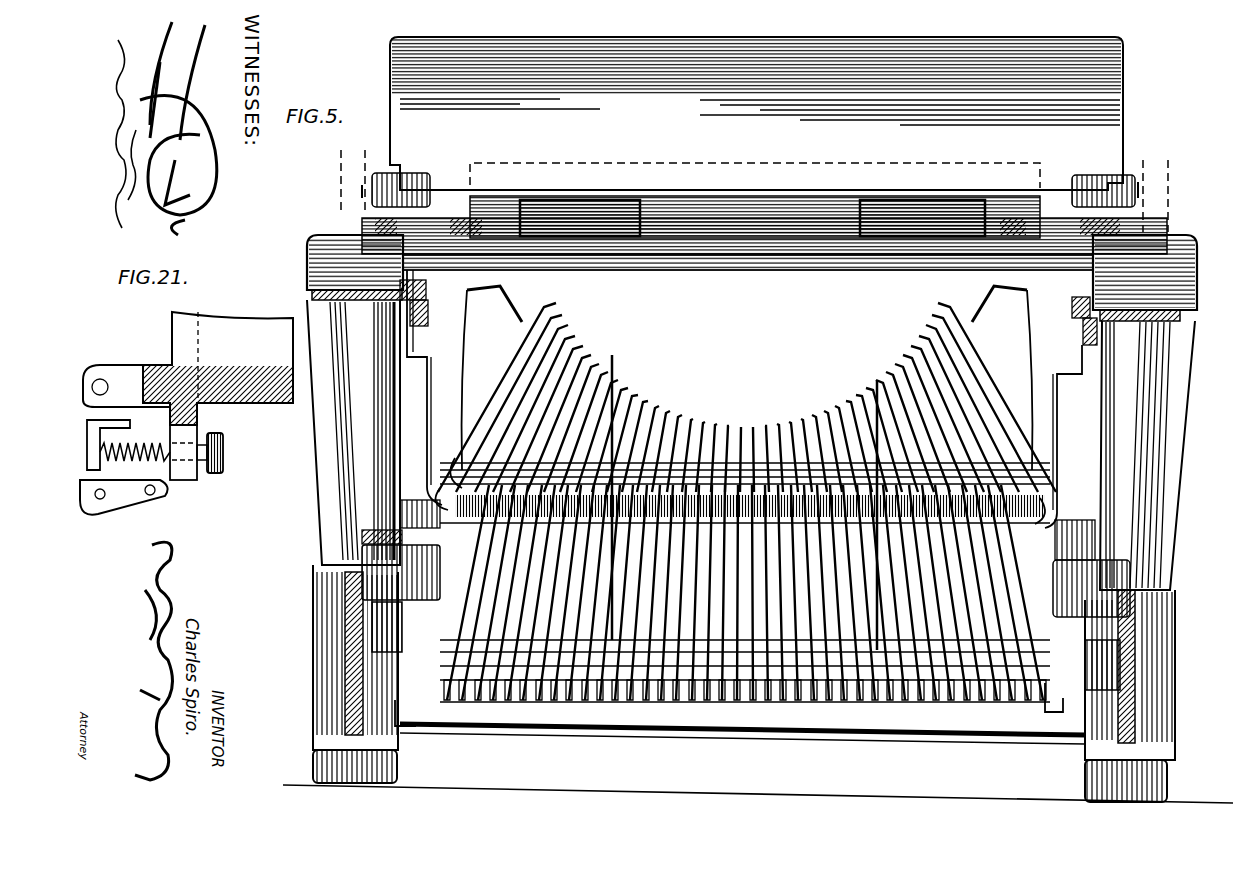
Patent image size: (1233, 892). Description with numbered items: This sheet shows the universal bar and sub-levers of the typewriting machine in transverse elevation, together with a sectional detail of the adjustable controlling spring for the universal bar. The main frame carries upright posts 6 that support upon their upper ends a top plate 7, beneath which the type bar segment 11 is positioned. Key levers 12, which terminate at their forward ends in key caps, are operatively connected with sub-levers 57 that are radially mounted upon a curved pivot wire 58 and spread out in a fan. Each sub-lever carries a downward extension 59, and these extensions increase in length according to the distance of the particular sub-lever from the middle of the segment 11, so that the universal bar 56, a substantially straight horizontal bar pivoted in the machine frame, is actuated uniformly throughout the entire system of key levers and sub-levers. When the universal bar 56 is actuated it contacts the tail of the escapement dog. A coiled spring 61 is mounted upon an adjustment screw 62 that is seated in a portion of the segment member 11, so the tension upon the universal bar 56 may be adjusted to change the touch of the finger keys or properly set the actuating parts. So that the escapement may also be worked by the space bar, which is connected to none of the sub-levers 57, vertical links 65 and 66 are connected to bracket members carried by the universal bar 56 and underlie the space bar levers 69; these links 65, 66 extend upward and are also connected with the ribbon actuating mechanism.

In FIG. 5, the top plate 7 is at (796, 262).
In FIG. 5, the upright post 6 is at (348, 372).
In FIG. 5, the type bar segment 11 is at (482, 362).
In FIG. 21, the type bar segment 11 is at (256, 368).
In FIG. 5, the vertical link 66 is at (412, 341).
In FIG. 5, the vertical link 65 is at (1078, 375).
In FIG. 5, the sub-levers 57 is at (820, 418).
In FIG. 5, the curved pivot wire 58 is at (482, 440).
In FIG. 5, the downward extensions 59 is at (460, 472).
In FIG. 5, the universal bar 56 is at (440, 496).
In FIG. 5, the key levers 12 is at (748, 700).
In FIG. 5, the space bar levers 69 is at (408, 727).
In FIG. 21, the adjustment screw 62 is at (224, 452).
In FIG. 21, the coiled spring 61 is at (150, 462).